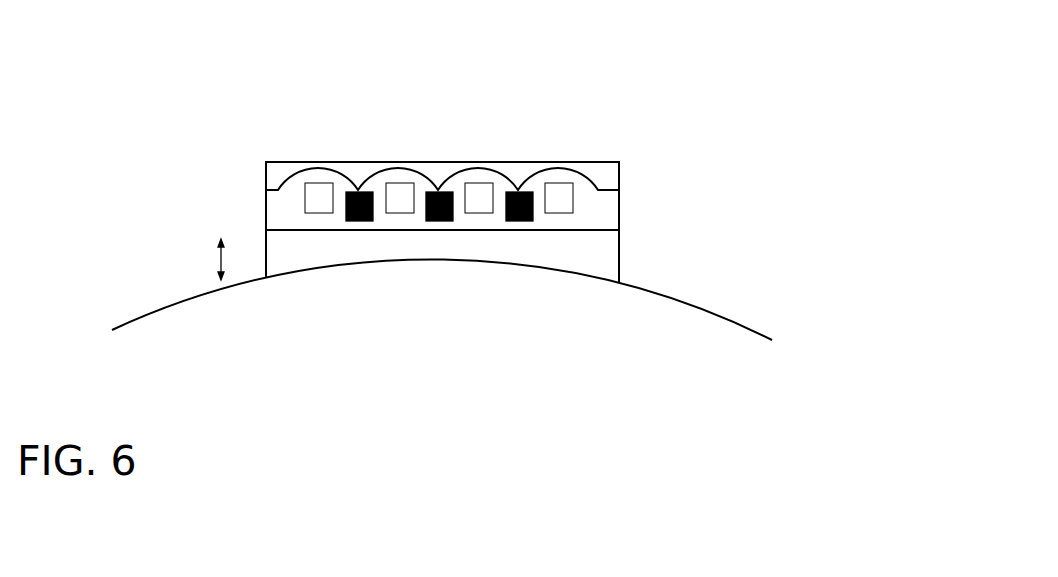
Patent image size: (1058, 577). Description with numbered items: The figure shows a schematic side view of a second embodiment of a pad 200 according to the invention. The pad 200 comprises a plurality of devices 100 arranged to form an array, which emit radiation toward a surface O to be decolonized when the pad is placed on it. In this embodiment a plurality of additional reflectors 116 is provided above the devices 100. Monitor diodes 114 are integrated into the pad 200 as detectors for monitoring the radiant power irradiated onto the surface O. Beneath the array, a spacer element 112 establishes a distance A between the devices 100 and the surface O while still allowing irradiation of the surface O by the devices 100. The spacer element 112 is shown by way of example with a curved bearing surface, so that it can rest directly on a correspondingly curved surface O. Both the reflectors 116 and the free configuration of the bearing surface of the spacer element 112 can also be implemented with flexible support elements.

The pad 200 is at (632, 117).
The device 100 is at (557, 202).
The spacer element 112 is at (595, 262).
The monitor diode 114 is at (533, 219).
The reflector 116 is at (333, 173).
The distance A is at (206, 259).
The surface O is at (732, 320).